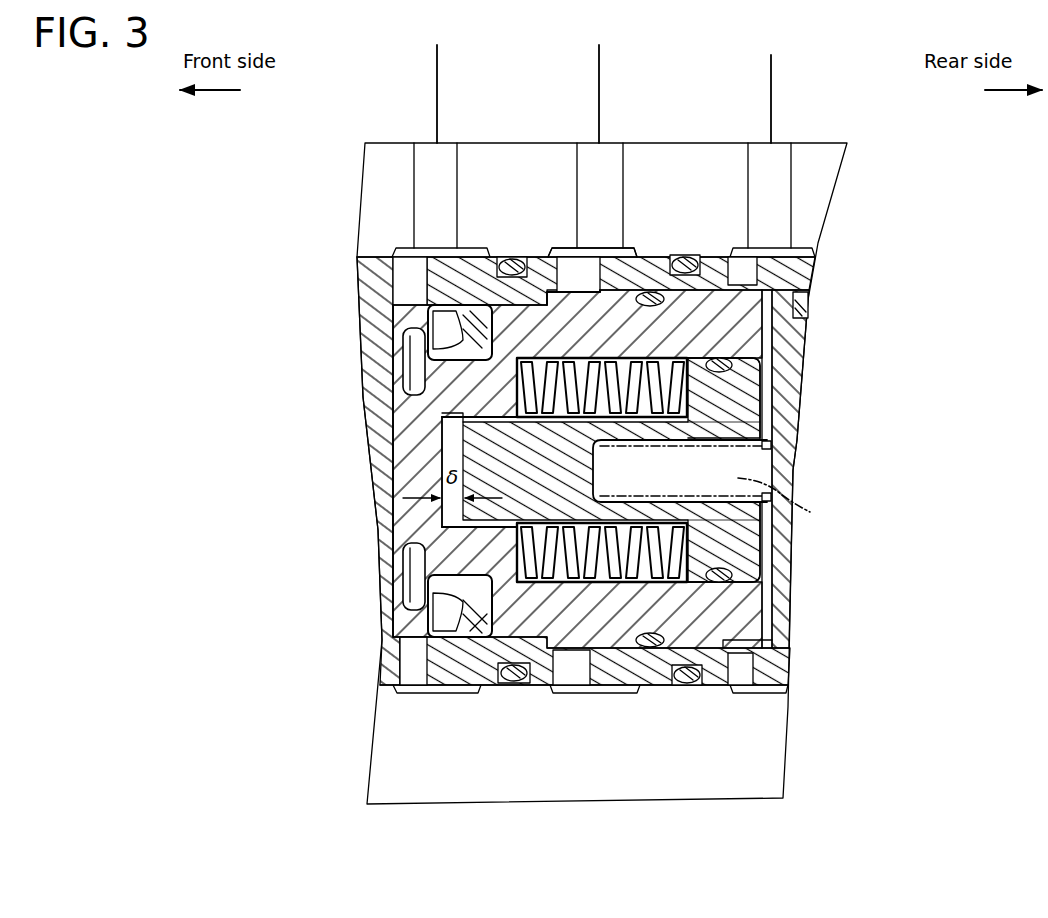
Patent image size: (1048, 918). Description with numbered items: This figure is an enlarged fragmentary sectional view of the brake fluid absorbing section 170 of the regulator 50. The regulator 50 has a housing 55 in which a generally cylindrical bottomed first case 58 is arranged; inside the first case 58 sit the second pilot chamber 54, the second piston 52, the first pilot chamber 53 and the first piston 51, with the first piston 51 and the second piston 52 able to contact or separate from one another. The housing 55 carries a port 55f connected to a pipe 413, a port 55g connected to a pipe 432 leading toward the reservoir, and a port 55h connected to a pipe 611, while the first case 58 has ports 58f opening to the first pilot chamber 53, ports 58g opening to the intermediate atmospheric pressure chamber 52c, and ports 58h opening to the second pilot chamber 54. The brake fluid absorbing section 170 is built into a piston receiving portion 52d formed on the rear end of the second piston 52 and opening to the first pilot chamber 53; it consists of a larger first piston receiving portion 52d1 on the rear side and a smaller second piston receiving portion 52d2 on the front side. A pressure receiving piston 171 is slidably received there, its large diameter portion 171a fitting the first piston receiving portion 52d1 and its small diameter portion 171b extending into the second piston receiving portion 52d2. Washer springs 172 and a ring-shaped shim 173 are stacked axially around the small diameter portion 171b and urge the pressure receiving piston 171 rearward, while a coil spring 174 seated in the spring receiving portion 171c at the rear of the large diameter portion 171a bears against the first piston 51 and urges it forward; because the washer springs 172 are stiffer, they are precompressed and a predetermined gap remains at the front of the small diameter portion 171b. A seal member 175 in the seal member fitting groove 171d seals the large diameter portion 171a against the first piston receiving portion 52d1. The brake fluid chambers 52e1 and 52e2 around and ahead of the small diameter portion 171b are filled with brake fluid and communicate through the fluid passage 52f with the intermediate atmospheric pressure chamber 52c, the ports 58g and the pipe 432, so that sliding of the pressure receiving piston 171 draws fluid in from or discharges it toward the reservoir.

The regulator 50 is at (613, 27).
The first piston 51 is at (782, 537).
The second piston 52 is at (410, 467).
The intermediate atmospheric pressure chamber 52c is at (600, 247).
The piston receiving portion 52d is at (440, 468).
The first piston receiving portion 52d1 is at (760, 382).
The second piston receiving portion 52d2 is at (420, 430).
The brake fluid chamber 52e1 is at (412, 365).
The brake fluid chamber 52e2 is at (403, 498).
The fluid passage 52f is at (565, 325).
The first pilot chamber 53 is at (773, 342).
The second pilot chamber 54 is at (403, 335).
The housing 55 is at (404, 750).
The port 55f is at (757, 190).
The port 55g is at (590, 192).
The port 55h is at (432, 192).
The first case 58 is at (375, 397).
The ports 58f is at (740, 267).
The ports 58g is at (578, 275).
The ports 58h is at (407, 288).
The brake fluid absorbing section 170 is at (785, 470).
The pressure receiving piston 171 is at (775, 552).
The large diameter portion 171a is at (732, 422).
The small diameter portion 171b is at (523, 545).
The spring receiving portion 171c is at (738, 462).
The seal member fitting groove 171d is at (723, 583).
The washer springs 172 is at (667, 552).
The shim 173 is at (410, 548).
The coil spring 174 is at (798, 502).
The seal member 175 is at (778, 640).
The pipe 413 is at (771, 78).
The pipe 432 is at (599, 78).
The pipe 611 is at (437, 78).